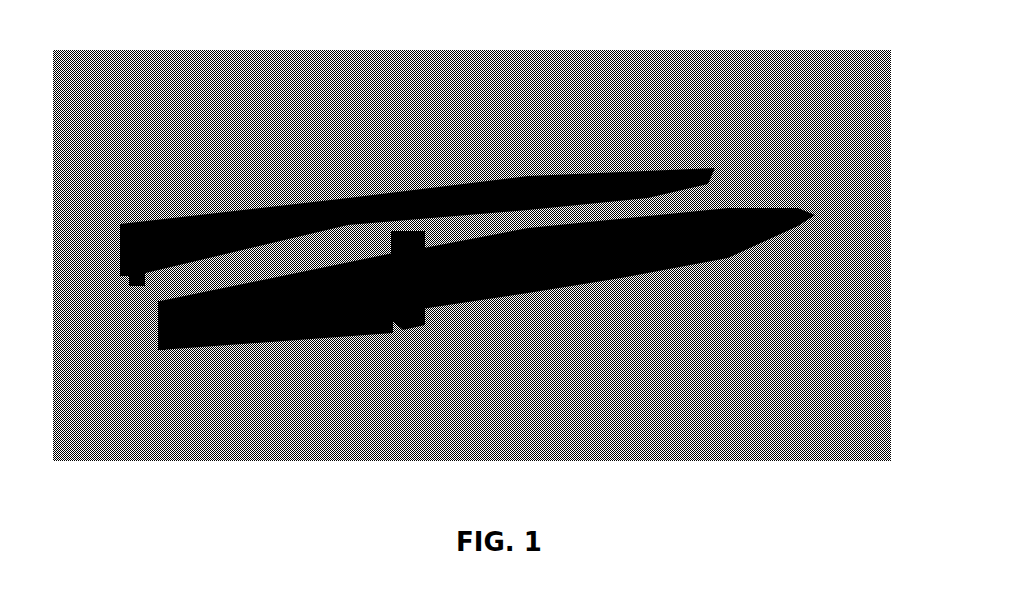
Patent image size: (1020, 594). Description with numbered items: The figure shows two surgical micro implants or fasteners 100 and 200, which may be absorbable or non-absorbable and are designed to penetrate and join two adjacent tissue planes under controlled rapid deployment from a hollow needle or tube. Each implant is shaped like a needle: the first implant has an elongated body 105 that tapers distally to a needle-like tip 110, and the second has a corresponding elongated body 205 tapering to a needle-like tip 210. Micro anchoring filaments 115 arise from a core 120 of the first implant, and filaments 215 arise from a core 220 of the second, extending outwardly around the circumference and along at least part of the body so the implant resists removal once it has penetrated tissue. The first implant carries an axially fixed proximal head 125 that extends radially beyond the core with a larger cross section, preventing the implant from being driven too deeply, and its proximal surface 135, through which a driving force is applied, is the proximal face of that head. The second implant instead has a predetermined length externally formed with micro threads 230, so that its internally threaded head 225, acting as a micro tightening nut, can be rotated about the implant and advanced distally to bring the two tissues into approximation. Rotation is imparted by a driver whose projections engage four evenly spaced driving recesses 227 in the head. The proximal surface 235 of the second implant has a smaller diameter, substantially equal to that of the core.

The surgical micro implant 100 is at (395, 187).
The elongated body 105 is at (452, 194).
The needle-like tip 110 is at (707, 160).
The micro anchoring filaments 115 is at (495, 170).
The core 120 is at (560, 178).
The proximal head 125 is at (118, 228).
The proximal surface 135 is at (118, 253).
The surgical micro implant 200 is at (478, 310).
The elongated body 205 is at (510, 265).
The needle-like tip 210 is at (808, 208).
The micro anchoring filaments 215 is at (573, 275).
The core 220 is at (665, 226).
The head 225 is at (392, 316).
The driving recesses 227 is at (395, 298).
The micro threads 230 is at (248, 312).
The proximal surface 235 is at (152, 318).